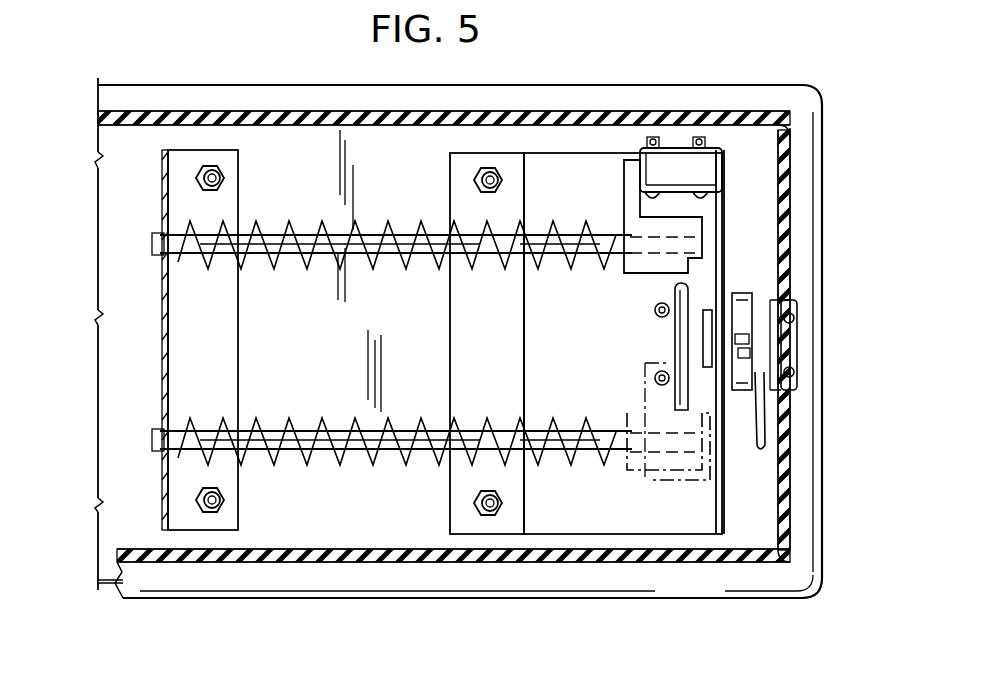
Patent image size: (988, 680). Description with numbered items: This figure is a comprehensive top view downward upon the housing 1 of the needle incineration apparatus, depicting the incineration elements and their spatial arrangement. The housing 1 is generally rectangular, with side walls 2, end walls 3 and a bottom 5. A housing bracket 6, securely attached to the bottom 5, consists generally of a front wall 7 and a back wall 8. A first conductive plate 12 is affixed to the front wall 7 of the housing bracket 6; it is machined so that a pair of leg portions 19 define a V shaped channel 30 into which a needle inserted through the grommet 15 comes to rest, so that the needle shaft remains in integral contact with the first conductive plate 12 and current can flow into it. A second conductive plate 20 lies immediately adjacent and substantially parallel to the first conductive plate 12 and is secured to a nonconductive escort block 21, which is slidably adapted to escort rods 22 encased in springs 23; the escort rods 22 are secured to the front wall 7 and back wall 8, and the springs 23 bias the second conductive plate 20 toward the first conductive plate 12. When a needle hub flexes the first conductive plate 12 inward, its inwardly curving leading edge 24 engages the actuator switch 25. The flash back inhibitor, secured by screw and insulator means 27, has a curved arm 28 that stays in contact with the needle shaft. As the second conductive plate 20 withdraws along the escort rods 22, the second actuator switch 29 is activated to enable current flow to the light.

The housing 1 is at (742, 87).
The side walls 2 is at (262, 108).
The end walls 3 is at (790, 470).
The bottom 5 is at (120, 381).
The housing bracket 6 is at (593, 530).
The front wall 7 is at (723, 495).
The back wall 8 is at (160, 282).
The first conductive plate 12 is at (788, 265).
The grommet 15 is at (787, 322).
The leg portions 19 is at (812, 283).
The second conductive plate 20 is at (707, 330).
The escort block 21 is at (695, 302).
The escort rods 22 is at (372, 245).
The springs 23 is at (330, 268).
The inwardly curving leading edge 24 is at (755, 392).
The actuator switch 25 is at (680, 482).
The screw and insulator means 27 is at (758, 290).
The curved arm 28 is at (757, 340).
The second actuator switch 29 is at (678, 170).
The V shaped channel 30 is at (752, 350).